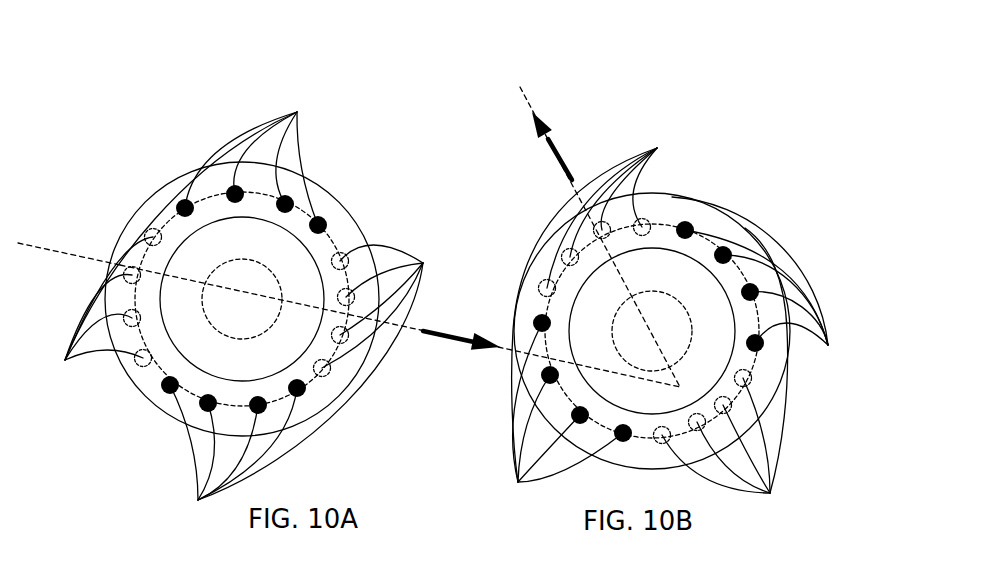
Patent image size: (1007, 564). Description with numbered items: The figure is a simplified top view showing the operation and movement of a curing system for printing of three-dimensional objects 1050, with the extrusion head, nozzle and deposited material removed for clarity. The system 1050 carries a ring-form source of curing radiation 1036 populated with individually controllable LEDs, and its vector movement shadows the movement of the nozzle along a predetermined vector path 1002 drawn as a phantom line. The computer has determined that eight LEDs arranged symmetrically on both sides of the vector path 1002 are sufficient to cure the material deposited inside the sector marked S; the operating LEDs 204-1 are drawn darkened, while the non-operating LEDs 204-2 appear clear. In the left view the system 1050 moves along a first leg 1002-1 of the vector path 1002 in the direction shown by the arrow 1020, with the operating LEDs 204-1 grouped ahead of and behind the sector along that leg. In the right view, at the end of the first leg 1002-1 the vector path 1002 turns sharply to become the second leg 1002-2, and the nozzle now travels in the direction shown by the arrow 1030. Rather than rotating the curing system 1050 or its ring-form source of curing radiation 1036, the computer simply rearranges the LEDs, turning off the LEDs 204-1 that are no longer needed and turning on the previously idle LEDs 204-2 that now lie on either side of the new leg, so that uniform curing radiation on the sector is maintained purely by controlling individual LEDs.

In FIG. 10A, the curing system for printing of 3-D objects 1050 is at (223, 76).
In FIG. 10B, the curing system for printing of 3-D objects 1050 is at (660, 76).
In FIG. 10A, the ring-form source of curing radiation 1036 is at (197, 172).
In FIG. 10B, the ring-form source of curing radiation 1036 is at (654, 193).
In FIG. 10A, the predetermined vector path 1002 is at (43, 247).
In FIG. 10A, the first leg of predetermined vector path 1002-1 is at (403, 327).
In FIG. 10B, the second leg of predetermined vector path 1002-2 is at (520, 88).
In FIG. 10A, the arrow indicating direction of movement along first leg 1020 is at (443, 347).
In FIG. 10B, the arrow indicating changed direction of extrusion nozzle 1030 is at (531, 108).
In FIG. 10A, the operating LEDs 204-1 is at (244, 307).
In FIG. 10B, the operating LEDs 204-1 is at (683, 357).
In FIG. 10A, the non-operating LEDs 204-2 is at (258, 317).
In FIG. 10B, the non-operating LEDs 204-2 is at (669, 331).